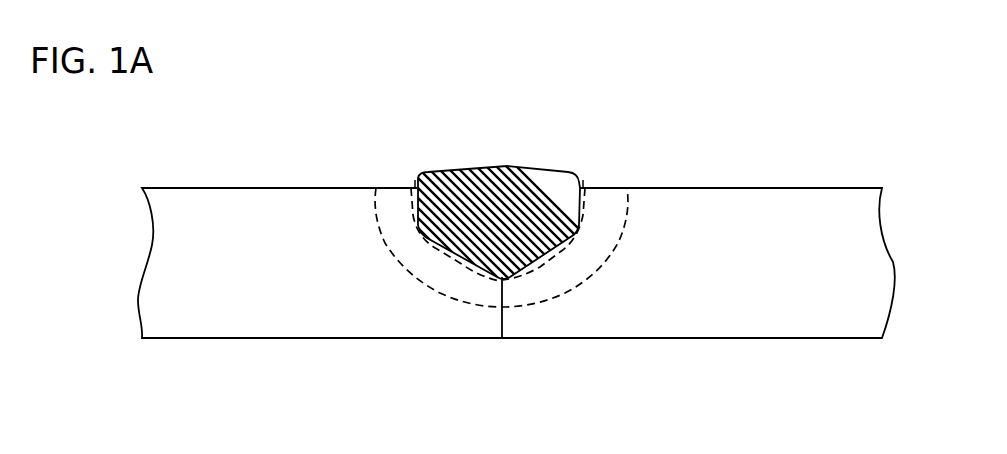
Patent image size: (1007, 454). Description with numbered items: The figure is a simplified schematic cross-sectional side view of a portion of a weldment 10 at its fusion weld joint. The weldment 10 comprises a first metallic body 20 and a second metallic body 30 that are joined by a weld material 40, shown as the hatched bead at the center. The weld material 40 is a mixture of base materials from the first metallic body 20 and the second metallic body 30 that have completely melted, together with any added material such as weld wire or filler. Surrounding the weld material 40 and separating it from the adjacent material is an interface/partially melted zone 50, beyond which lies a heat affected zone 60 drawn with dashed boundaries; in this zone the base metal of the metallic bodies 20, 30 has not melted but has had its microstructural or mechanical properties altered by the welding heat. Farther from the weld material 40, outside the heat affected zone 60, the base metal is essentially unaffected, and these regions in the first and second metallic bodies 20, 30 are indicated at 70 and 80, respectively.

The weldment 10 is at (328, 113).
The first metallic body 20 is at (215, 303).
The second metallic body 30 is at (845, 310).
The weld material 40 is at (505, 187).
The interface/partially melted zone 50 is at (415, 188).
The heat affected zone 60 is at (397, 205).
The region of essentially unaffected base metal of first metallic body 70 is at (248, 205).
The region of essentially unaffected base metal of second metallic body 80 is at (753, 203).